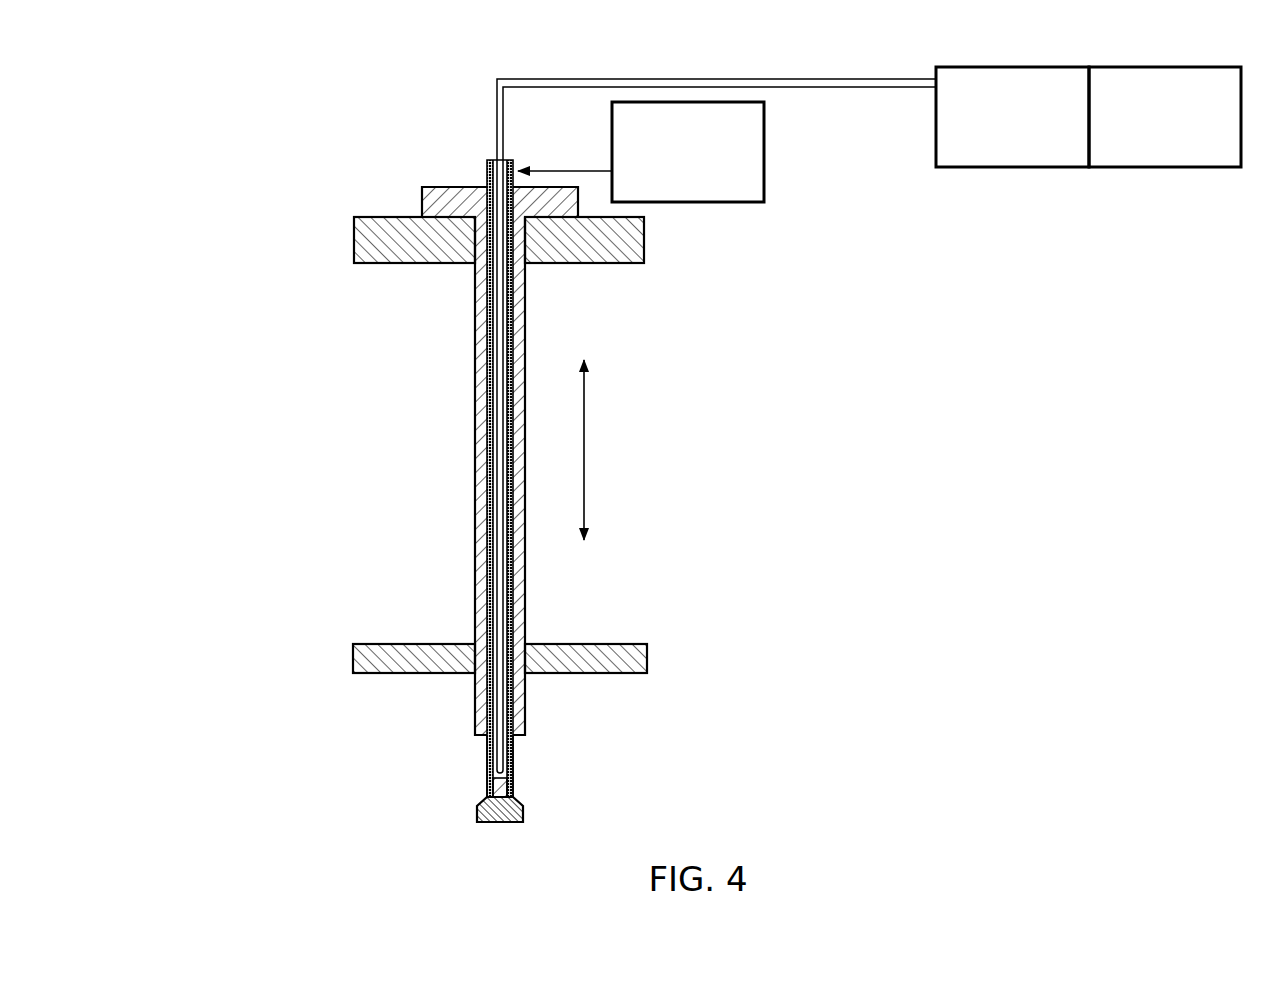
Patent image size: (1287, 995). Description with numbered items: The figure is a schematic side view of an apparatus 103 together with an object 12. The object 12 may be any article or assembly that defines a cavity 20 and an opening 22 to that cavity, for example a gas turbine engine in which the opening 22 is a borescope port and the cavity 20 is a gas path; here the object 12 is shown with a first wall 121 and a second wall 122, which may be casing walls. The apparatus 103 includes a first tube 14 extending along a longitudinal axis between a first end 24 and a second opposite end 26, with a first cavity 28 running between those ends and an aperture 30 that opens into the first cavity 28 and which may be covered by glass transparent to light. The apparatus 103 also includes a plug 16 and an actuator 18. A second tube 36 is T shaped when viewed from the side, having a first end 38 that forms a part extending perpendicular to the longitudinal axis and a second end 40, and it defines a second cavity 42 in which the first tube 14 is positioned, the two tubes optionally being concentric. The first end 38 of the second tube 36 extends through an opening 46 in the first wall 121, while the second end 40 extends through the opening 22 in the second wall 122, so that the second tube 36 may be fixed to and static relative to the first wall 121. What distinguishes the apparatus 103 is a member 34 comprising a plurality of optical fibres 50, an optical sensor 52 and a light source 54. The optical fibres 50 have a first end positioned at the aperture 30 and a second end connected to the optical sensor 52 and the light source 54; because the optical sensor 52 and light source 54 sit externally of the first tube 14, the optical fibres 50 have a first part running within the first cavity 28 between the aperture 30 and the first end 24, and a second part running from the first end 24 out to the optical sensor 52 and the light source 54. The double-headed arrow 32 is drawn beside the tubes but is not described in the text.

The object 12 is at (243, 147).
The apparatus 103 is at (193, 257).
The first tube 14 is at (512, 758).
The plug 16 is at (523, 812).
The actuator 18 is at (765, 175).
The cavity 20 is at (689, 718).
The opening 22 is at (540, 628).
The first end 24 is at (470, 162).
The second end 26 is at (537, 792).
The first cavity 28 is at (495, 318).
The aperture 30 is at (498, 757).
The axial movement direction 32 is at (584, 427).
The member 34 is at (870, 303).
The second tube 36 is at (475, 448).
The first end 38 is at (410, 193).
The second end 40 is at (453, 722).
The second cavity 42 is at (477, 748).
The opening 46 is at (537, 278).
The plurality of optical fibres 50 is at (693, 79).
The optical sensor 52 is at (968, 167).
The light source 54 is at (1206, 167).
The first wall 121 is at (355, 277).
The second wall 122 is at (352, 632).